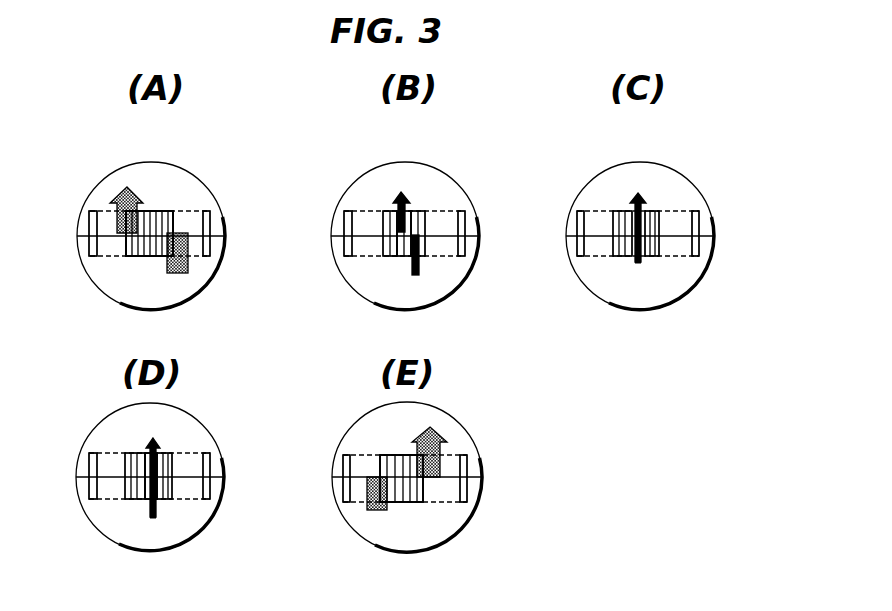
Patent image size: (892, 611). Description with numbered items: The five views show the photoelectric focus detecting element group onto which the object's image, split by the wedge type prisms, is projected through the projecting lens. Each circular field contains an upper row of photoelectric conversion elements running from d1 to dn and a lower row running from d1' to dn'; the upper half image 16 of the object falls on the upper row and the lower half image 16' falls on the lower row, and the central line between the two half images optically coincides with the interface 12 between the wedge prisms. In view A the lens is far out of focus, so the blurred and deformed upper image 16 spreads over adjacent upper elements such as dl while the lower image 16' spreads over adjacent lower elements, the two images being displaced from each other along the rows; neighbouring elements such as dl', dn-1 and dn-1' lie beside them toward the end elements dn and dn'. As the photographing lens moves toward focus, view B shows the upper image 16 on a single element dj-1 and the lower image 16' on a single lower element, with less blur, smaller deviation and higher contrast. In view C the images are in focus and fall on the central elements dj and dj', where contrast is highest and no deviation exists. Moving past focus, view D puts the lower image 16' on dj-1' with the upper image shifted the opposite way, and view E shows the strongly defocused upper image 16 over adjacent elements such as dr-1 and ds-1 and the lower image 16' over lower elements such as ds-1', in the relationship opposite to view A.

In FIG. 3A, the interface between wedge type prisms 12 is at (225, 220).
In FIG. 3B, the interface between wedge type prisms 12 is at (479, 220).
In FIG. 3C, the interface between wedge type prisms 12 is at (714, 212).
In FIG. 3D, the interface between wedge type prisms 12 is at (228, 457).
In FIG. 3E, the interface between wedge type prisms 12 is at (482, 462).
In FIG. 3A, the upper half image 16 is at (121, 184).
In FIG. 3B, the upper half image 16 is at (405, 177).
In FIG. 3C, the upper half image 16 is at (642, 192).
In FIG. 3D, the upper half image 16 is at (172, 447).
In FIG. 3E, the upper half image 16 is at (445, 435).
In FIG. 3A, the lower half image 16' is at (201, 277).
In FIG. 3B, the lower half image 16' is at (429, 289).
In FIG. 3C, the lower half image 16' is at (669, 298).
In FIG. 3D, the lower half image 16' is at (133, 549).
In FIG. 3E, the lower half image 16' is at (354, 518).
In FIG. 3A, the first upper photoelectric conversion element d1 is at (76, 208).
In FIG. 3B, the first upper photoelectric conversion element d1 is at (333, 207).
In FIG. 3C, the first upper photoelectric conversion element d1 is at (563, 209).
In FIG. 3D, the first upper photoelectric conversion element d1 is at (74, 450).
In FIG. 3E, the first upper photoelectric conversion element d1 is at (328, 454).
In FIG. 3A, the first lower photoelectric conversion element d1' is at (72, 255).
In FIG. 3B, the first lower photoelectric conversion element d1' is at (327, 253).
In FIG. 3C, the first lower photoelectric conversion element d1' is at (562, 255).
In FIG. 3D, the first lower photoelectric conversion element d1' is at (72, 497).
In FIG. 3E, the first lower photoelectric conversion element d1' is at (327, 494).
In FIG. 3A, the last upper photoelectric conversion element dn is at (224, 215).
In FIG. 3B, the last upper photoelectric conversion element dn is at (482, 214).
In FIG. 3C, the last upper photoelectric conversion element dn is at (713, 209).
In FIG. 3D, the last upper photoelectric conversion element dn is at (223, 458).
In FIG. 3E, the last upper photoelectric conversion element dn is at (482, 460).
In FIG. 3A, the last lower photoelectric conversion element dn' is at (227, 247).
In FIG. 3B, the last lower photoelectric conversion element dn' is at (482, 247).
In FIG. 3C, the last lower photoelectric conversion element dn' is at (716, 252).
In FIG. 3D, the last lower photoelectric conversion element dn' is at (226, 498).
In FIG. 3E, the last lower photoelectric conversion element dn' is at (483, 502).
In FIG. 3A, the upper photoelectric conversion element dl is at (149, 193).
In FIG. 3A, the (n-1)-th light-receiving segment dn-1 is at (182, 204).
In FIG. 3A, the l-th segment of second array dl' is at (123, 269).
In FIG. 3A, the (n-1)-th segment of second array dn-1' is at (166, 276).
In FIG. 3B, the upper photoelectric conversion element dj-1 is at (371, 192).
In FIG. 3C, the upper photoelectric conversion element dj-1 is at (602, 193).
In FIG. 3D, the upper photoelectric conversion element dj-1 is at (106, 440).
In FIG. 3B, the central upper photoelectric conversion element dj is at (421, 195).
In FIG. 3C, the central upper photoelectric conversion element dj is at (669, 200).
In FIG. 3D, the central upper photoelectric conversion element dj is at (141, 454).
In FIG. 3B, the lower photoelectric conversion element dj-1' is at (359, 271).
In FIG. 3C, the lower photoelectric conversion element dj-1' is at (592, 272).
In FIG. 3D, the lower photoelectric conversion element dj-1' is at (101, 513).
In FIG. 3B, the central lower photoelectric conversion element dj' is at (395, 275).
In FIG. 3C, the central lower photoelectric conversion element dj' is at (642, 277).
In FIG. 3D, the central lower photoelectric conversion element dj' is at (159, 517).
In FIG. 3E, the photoelectric conversion element dr-1 is at (385, 455).
In FIG. 3E, the upper photoelectric conversion element ds-1 is at (401, 455).
In FIG. 3E, the (s-1)-th segment of second array ds-1' is at (425, 519).